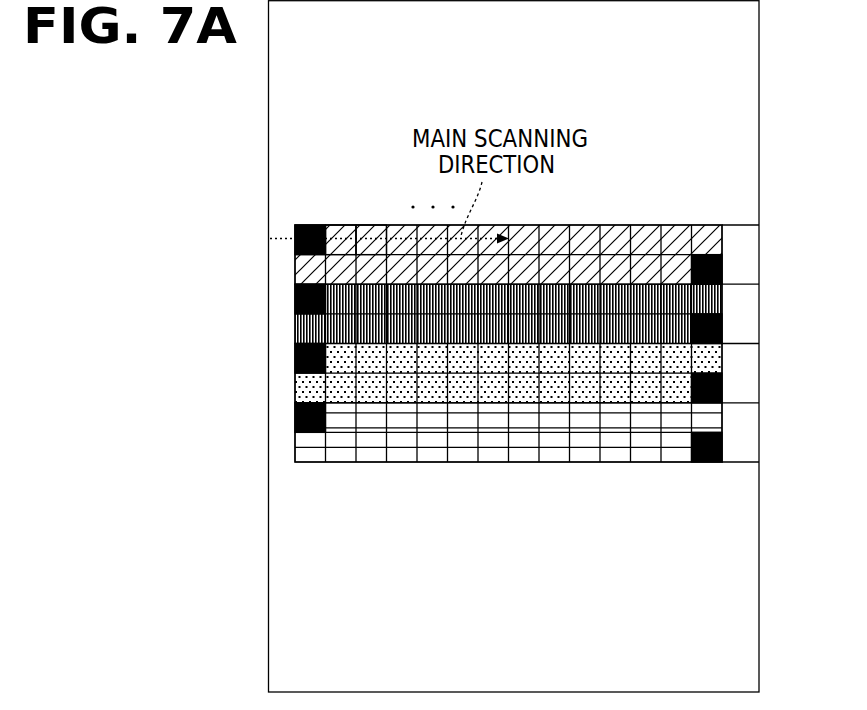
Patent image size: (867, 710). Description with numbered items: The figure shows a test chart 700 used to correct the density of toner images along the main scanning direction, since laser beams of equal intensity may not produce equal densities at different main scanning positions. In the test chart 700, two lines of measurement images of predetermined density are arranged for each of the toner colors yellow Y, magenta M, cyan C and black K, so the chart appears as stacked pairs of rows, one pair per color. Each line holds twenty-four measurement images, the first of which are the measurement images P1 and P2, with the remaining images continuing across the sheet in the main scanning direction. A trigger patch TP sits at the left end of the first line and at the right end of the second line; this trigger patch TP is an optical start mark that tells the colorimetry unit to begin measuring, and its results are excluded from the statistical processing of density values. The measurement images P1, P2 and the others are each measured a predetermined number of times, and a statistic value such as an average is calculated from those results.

The test chart 700 is at (759, 98).
The trigger patch TP is at (302, 224).
The measurement image P1 is at (342, 224).
The measurement image P2 is at (373, 224).
The yellow toner color Y is at (759, 225).
The magenta toner color M is at (759, 284).
The cyan toner color C is at (759, 344).
The black toner color K is at (759, 403).